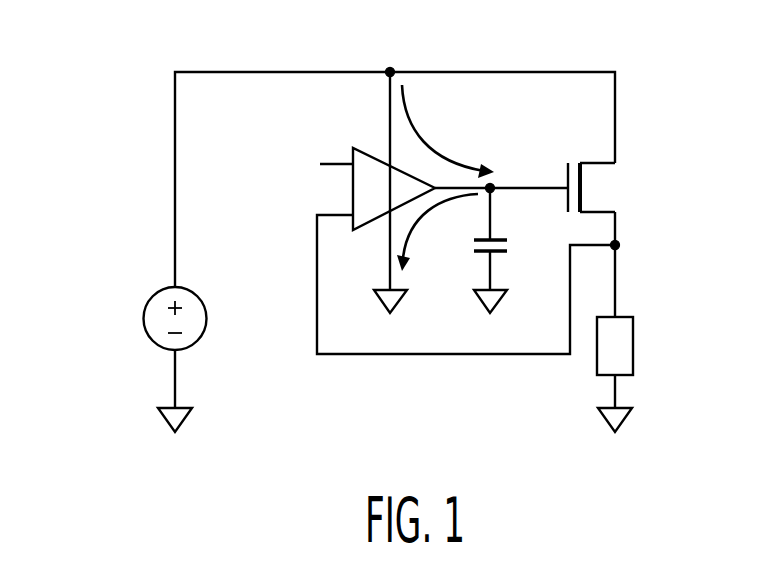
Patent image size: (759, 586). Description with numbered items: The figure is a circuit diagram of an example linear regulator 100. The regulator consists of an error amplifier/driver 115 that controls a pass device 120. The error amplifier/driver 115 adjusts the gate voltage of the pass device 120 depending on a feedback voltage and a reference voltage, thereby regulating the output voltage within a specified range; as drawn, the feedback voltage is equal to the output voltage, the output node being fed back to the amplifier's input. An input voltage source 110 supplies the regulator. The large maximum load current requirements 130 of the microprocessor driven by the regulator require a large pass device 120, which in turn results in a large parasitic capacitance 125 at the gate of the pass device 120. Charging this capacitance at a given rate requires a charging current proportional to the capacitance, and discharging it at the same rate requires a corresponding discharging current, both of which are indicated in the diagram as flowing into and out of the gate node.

The linear regulator 100 is at (122, 58).
The input voltage source 110 is at (153, 296).
The error amplifier/driver 115 is at (363, 148).
The pass device 120 is at (582, 186).
The parasitic capacitance 125 is at (476, 252).
The load current requirements 130 is at (633, 345).